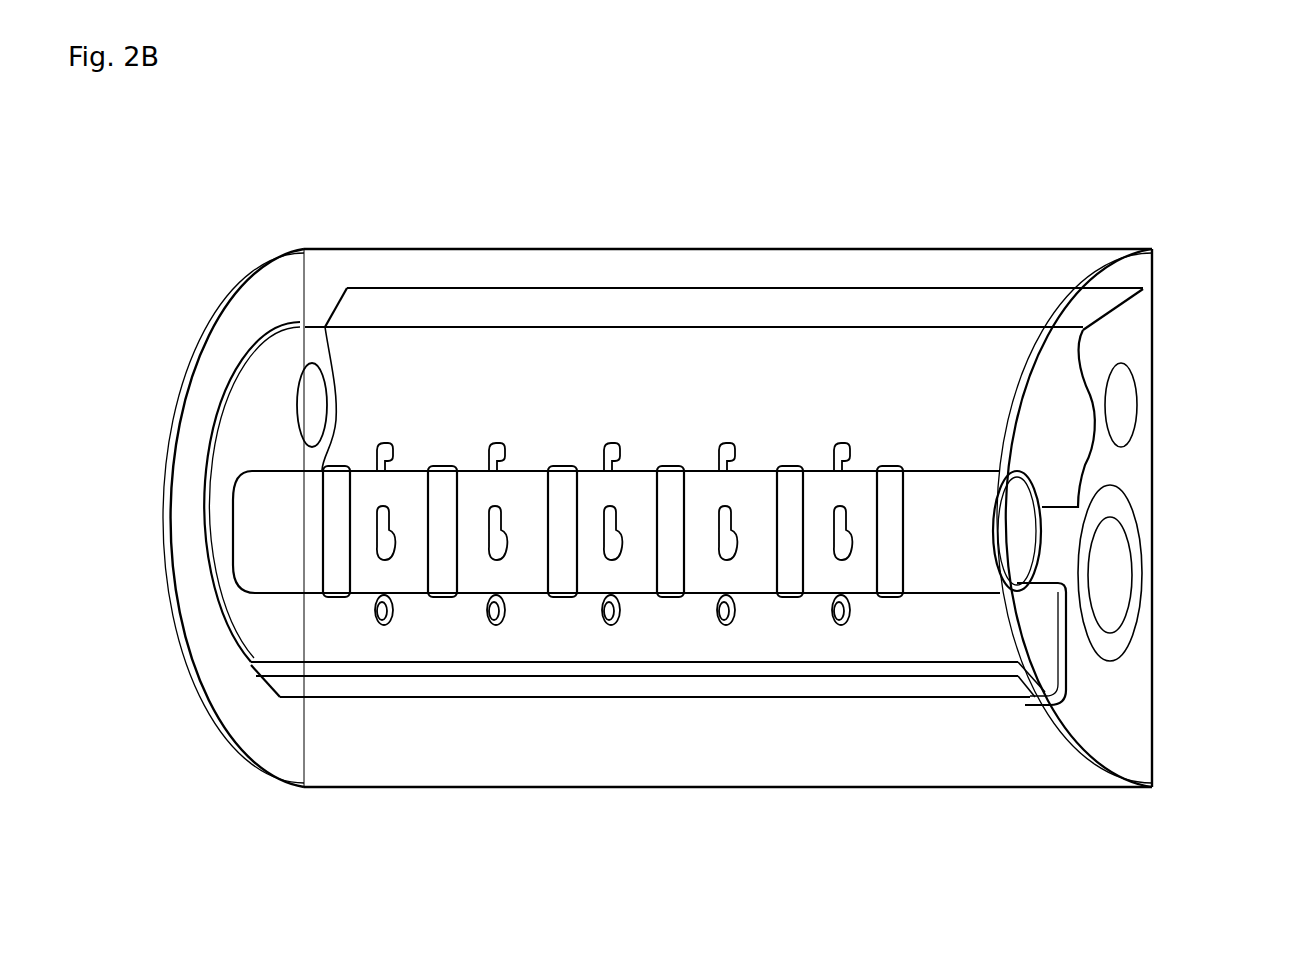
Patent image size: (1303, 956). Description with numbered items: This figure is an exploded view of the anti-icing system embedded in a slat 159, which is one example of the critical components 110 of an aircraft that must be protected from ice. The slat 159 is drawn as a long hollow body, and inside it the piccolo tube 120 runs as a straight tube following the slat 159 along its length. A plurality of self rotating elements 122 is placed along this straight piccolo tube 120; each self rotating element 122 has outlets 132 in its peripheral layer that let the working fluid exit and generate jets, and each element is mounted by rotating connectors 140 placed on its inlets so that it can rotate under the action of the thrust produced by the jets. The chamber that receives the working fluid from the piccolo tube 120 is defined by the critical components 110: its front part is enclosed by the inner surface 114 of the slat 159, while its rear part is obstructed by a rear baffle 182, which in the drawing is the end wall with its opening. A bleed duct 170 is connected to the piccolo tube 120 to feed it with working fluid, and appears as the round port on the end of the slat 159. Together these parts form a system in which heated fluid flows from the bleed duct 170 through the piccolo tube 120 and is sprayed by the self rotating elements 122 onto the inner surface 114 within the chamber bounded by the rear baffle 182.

The critical components 110 is at (205, 320).
The inner surface 114 is at (1152, 783).
The piccolo tube 120 is at (262, 472).
The self rotating elements 122 is at (397, 661).
The outlets 132 is at (627, 575).
The rotating connectors 140 is at (548, 468).
The slat 159 is at (745, 168).
The bleed duct 170 is at (1137, 527).
The rear baffle 182 is at (1100, 388).